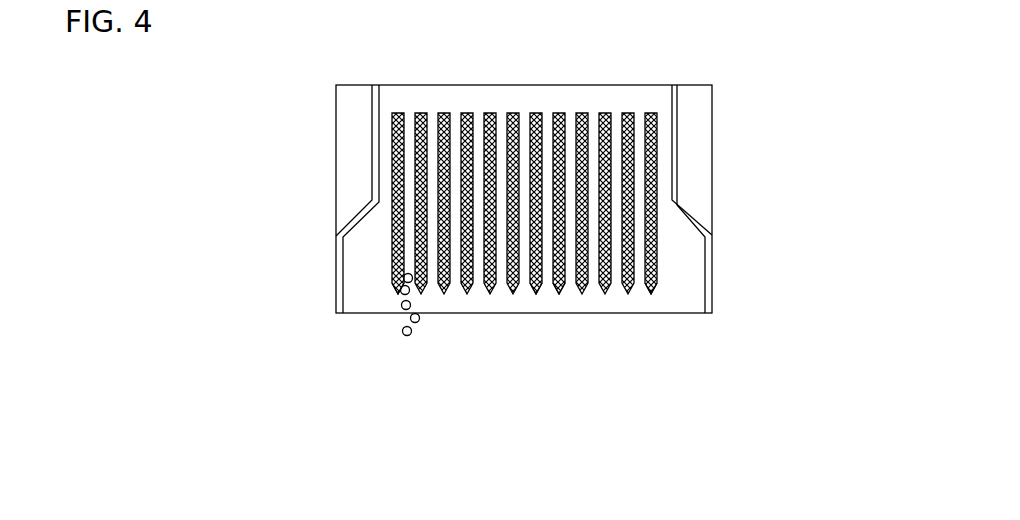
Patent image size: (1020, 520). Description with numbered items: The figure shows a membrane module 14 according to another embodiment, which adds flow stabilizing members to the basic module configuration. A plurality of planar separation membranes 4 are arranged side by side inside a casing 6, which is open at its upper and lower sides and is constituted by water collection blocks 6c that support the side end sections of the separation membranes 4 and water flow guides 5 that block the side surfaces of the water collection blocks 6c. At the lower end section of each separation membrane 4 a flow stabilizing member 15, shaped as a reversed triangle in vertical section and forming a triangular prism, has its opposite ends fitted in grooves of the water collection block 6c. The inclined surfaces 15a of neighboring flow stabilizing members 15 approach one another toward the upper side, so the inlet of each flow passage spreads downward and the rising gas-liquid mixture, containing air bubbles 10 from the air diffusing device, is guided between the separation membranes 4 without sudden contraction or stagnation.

The separation membrane 4 is at (657, 243).
The water flow guide 5 is at (677, 113).
The casing 6 is at (579, 195).
The water collection block 6c is at (712, 138).
The air bubbles 10 is at (407, 336).
The membrane module 14 is at (580, 255).
The flow stabilizing member 15 is at (397, 288).
The inclined surface 15a is at (592, 385).